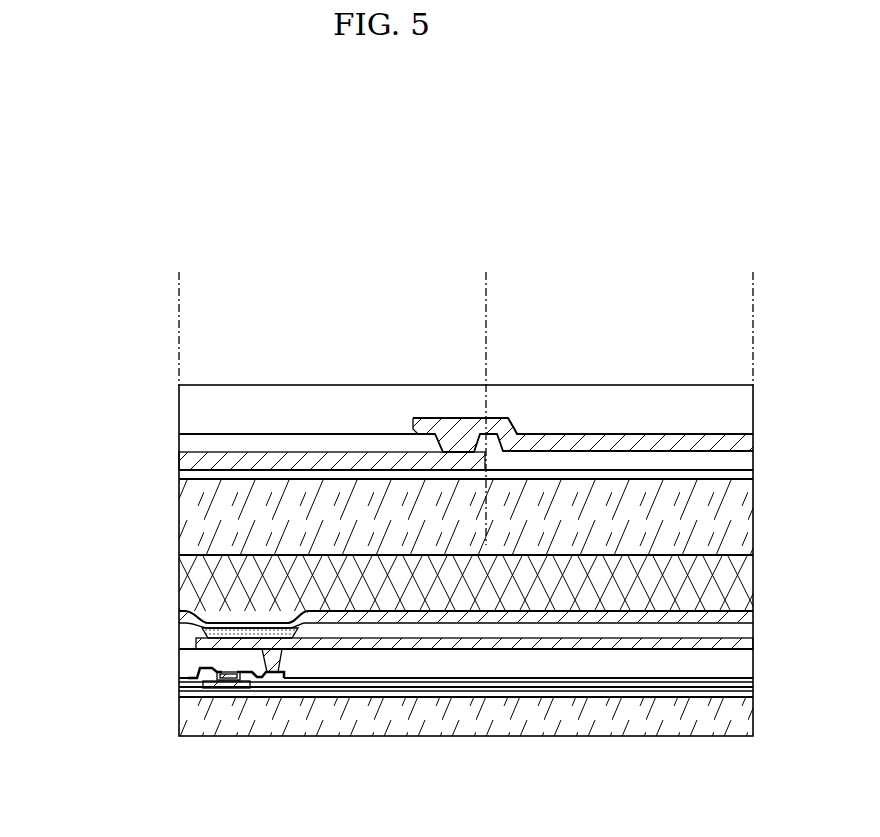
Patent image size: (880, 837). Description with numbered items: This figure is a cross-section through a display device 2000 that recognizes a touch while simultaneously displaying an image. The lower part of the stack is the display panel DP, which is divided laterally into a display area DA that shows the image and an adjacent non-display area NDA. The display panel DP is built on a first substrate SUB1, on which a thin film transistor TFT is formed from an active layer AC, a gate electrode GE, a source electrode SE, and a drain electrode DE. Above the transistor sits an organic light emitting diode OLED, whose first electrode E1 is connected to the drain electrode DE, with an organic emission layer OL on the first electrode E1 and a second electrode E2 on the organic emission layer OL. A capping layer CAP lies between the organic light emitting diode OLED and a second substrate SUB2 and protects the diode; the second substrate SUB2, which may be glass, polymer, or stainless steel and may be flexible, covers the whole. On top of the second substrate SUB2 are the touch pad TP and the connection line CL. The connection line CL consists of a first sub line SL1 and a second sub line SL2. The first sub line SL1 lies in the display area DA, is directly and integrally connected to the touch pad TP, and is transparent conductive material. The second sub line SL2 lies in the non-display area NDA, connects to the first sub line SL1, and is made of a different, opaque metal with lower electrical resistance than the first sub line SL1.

The display device 2000 is at (402, 198).
The display area DA is at (484, 278).
The non-display area NDA is at (751, 278).
The display panel DP is at (381, 536).
The connection line CL is at (466, 376).
The first sub line SL1 is at (448, 458).
The second sub line SL2 is at (557, 442).
The touch pad TP is at (233, 457).
The second substrate SUB2 is at (185, 507).
The capping layer CAP is at (230, 585).
The organic light emitting diode OLED is at (404, 595).
The second electrode E2 is at (273, 624).
The organic emission layer OL is at (242, 632).
The first electrode E1 is at (243, 639).
The thin film transistor TFT is at (409, 684).
The source electrode SE is at (198, 669).
The gate electrode GE is at (208, 685).
The active layer AC is at (226, 680).
The drain electrode DE is at (258, 679).
The first substrate SUB1 is at (404, 737).